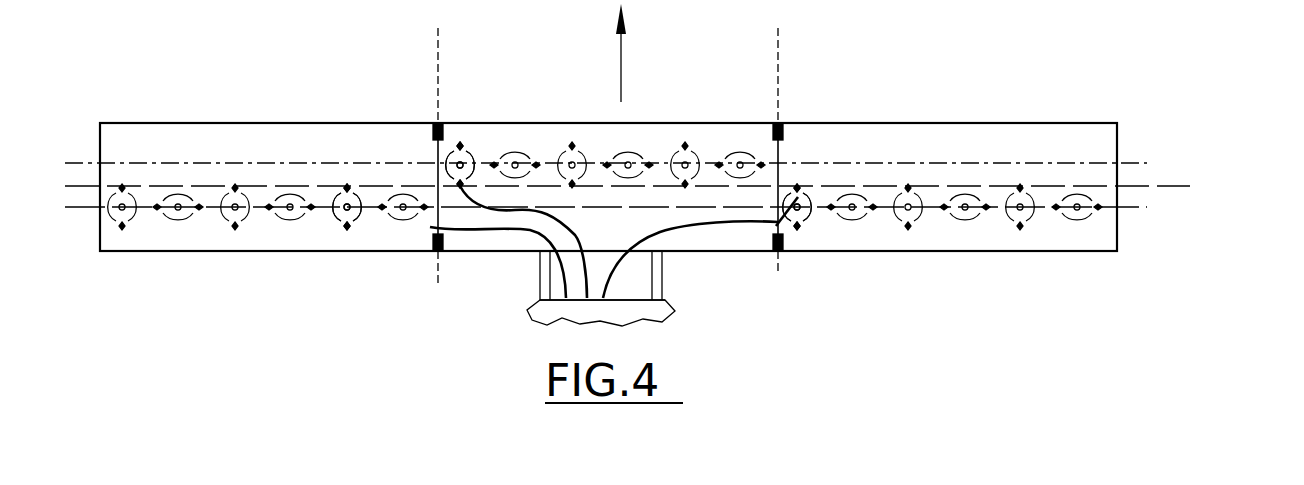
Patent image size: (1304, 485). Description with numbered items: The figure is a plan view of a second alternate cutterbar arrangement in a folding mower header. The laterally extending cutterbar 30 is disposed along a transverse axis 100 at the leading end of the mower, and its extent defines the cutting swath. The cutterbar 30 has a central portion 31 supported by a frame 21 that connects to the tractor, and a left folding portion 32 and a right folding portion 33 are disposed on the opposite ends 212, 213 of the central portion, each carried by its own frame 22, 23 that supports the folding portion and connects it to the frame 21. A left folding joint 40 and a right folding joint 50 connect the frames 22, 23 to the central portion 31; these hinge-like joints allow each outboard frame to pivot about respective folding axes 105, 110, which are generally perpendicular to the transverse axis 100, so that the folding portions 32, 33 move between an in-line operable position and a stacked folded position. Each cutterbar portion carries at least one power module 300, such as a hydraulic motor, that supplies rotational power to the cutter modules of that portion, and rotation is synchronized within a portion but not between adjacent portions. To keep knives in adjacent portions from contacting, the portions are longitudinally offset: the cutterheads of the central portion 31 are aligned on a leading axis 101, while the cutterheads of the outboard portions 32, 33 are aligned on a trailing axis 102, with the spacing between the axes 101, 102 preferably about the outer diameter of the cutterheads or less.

The frame 21 is at (543, 207).
The frame 22 is at (219, 269).
The frame 23 is at (980, 263).
The cutterbar 30 is at (990, 145).
The central portion 31 is at (640, 122).
The left folding portion 32 is at (170, 240).
The right folding portion 33 is at (1043, 236).
The left folding joint 40 is at (437, 120).
The right folding joint 50 is at (778, 122).
The transverse axis 100 is at (1167, 190).
The leading axis 101 is at (1133, 162).
The trailing axis 102 is at (1132, 210).
The folding axis 105 is at (438, 50).
The folding axis 110 is at (778, 62).
The end of central portion 212 is at (432, 232).
The end of central portion 213 is at (792, 228).
The power module 300 is at (397, 162).